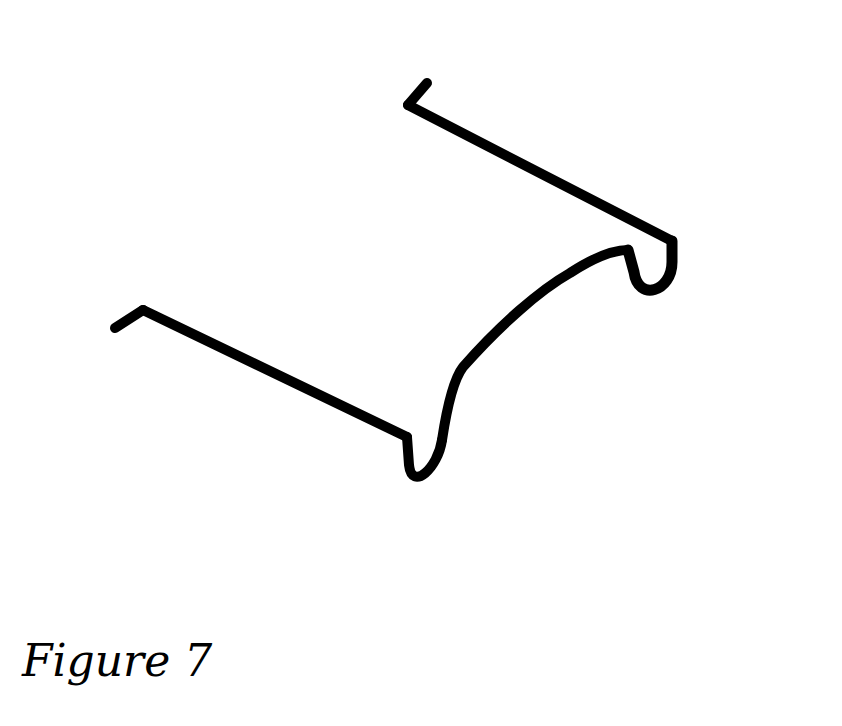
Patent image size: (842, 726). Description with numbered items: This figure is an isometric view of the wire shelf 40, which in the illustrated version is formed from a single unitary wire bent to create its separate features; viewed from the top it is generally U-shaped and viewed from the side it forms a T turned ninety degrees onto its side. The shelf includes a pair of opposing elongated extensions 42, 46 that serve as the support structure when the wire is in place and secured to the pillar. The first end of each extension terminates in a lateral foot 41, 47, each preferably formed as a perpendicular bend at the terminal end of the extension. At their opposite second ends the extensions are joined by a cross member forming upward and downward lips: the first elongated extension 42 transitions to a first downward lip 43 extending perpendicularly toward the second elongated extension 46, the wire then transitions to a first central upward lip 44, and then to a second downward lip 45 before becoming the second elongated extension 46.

The wire shelf 40 is at (739, 324).
The lateral foot 41 is at (433, 82).
The first elongated extension 42 is at (523, 157).
The first downward lip 43 is at (658, 298).
The first central upward lip 44 is at (517, 300).
The second downward lip 45 is at (440, 467).
The second elongated extension 46 is at (245, 350).
The lateral foot 47 is at (118, 312).